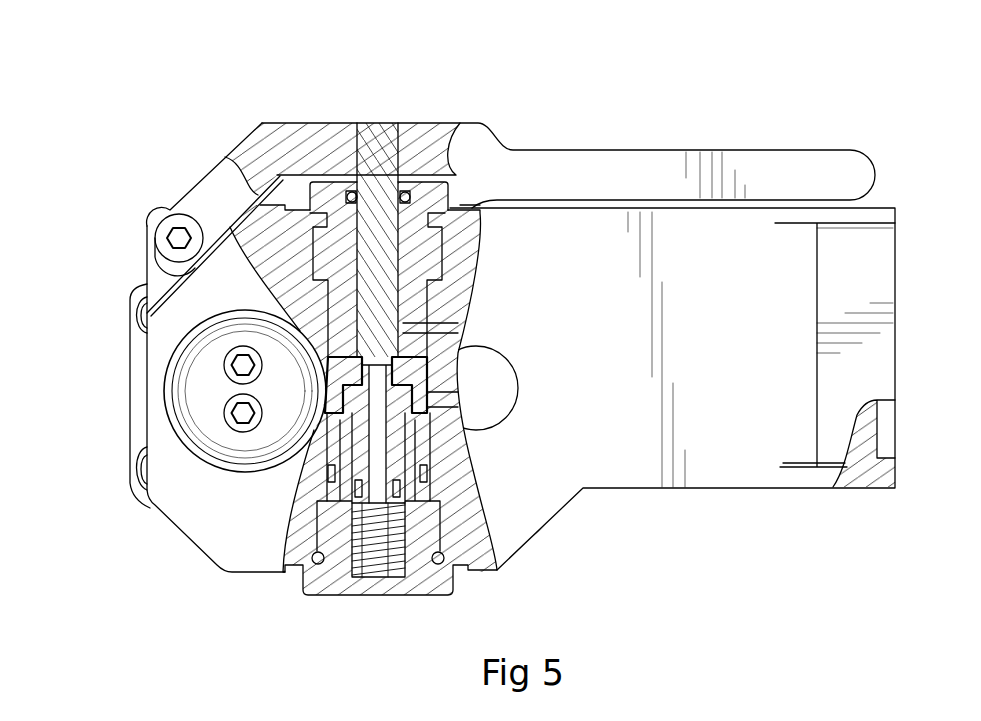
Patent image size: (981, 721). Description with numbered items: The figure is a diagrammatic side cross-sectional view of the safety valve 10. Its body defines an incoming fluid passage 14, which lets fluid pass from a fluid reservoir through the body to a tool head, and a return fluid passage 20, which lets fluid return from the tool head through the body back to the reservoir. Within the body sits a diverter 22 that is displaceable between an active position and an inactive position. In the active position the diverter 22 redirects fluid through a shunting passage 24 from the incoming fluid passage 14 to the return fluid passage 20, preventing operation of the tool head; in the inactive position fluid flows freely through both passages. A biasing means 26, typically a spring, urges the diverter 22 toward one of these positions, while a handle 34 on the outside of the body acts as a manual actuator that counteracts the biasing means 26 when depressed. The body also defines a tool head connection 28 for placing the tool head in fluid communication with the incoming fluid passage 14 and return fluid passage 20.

The safety valve 10 is at (700, 585).
The incoming fluid passage 14 is at (443, 397).
The return fluid passage 20 is at (440, 325).
The diverter 22 is at (400, 393).
The shunting passage 24 is at (396, 292).
The biasing means 26 is at (370, 560).
The tool head connection 28 is at (132, 358).
The handle 34 is at (652, 153).